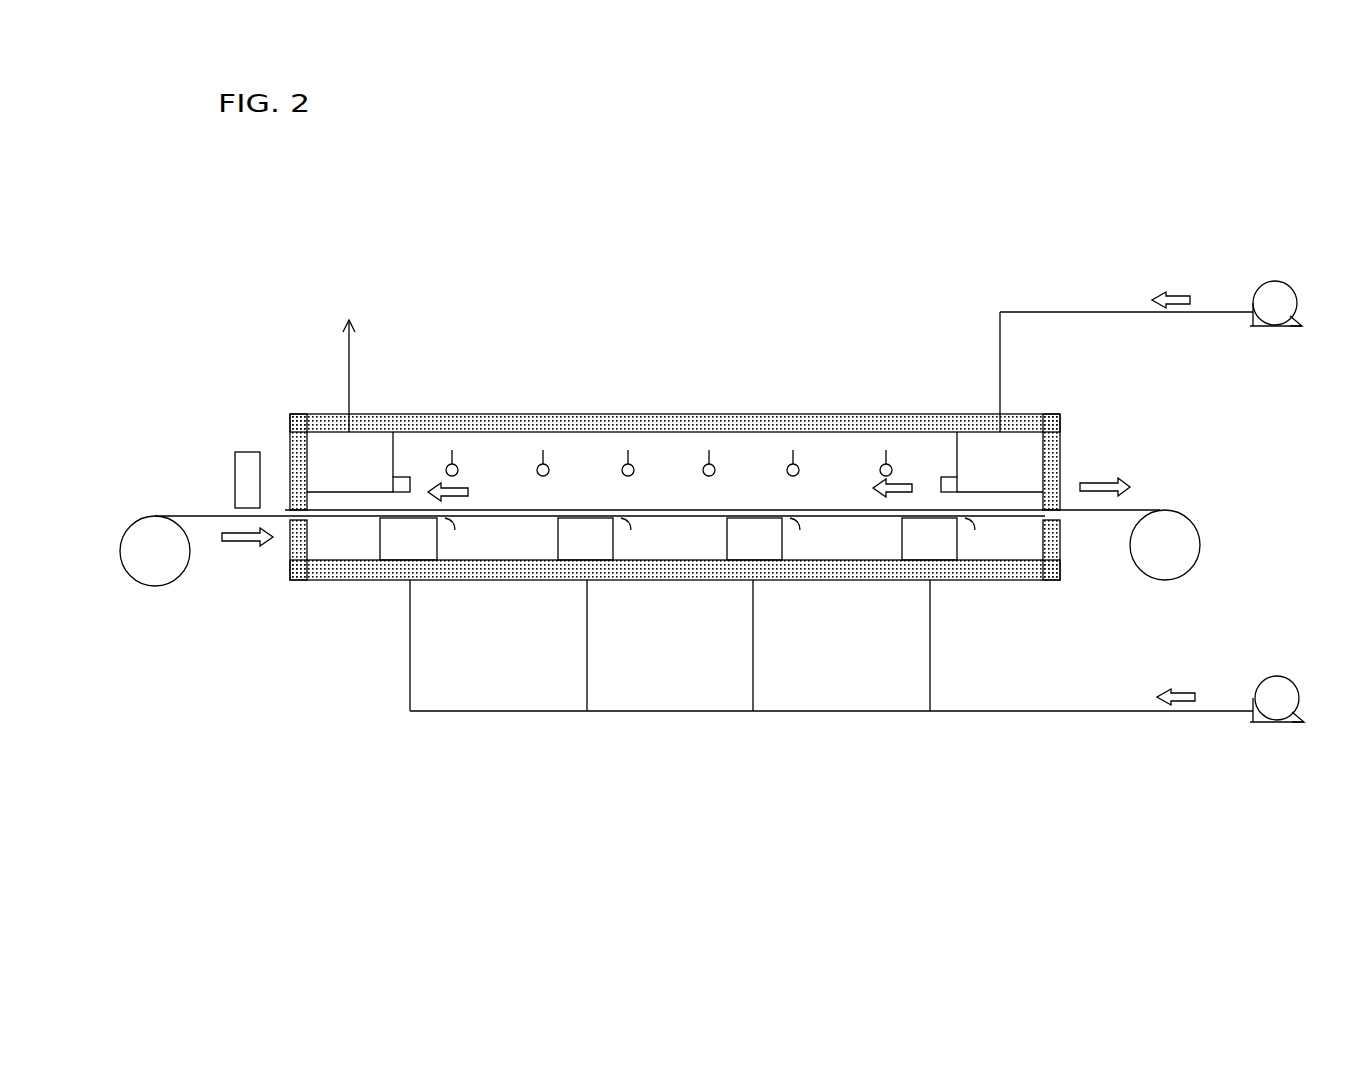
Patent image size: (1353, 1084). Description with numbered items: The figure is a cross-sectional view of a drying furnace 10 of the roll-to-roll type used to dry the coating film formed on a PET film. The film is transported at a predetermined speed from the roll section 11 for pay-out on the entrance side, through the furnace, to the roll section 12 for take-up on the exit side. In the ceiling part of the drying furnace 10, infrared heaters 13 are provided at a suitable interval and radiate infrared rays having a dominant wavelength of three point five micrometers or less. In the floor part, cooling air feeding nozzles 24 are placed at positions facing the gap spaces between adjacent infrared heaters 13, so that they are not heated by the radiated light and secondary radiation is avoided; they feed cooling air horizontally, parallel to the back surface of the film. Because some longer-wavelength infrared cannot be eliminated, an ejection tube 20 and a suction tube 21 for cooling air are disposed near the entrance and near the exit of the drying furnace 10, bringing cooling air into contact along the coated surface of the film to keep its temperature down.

The drying furnace 10 is at (764, 340).
The roll section for pay-out 11 is at (152, 535).
The roll section for take-up 12 is at (1164, 540).
The infrared heaters 13 is at (628, 462).
The ejection tube 20 is at (947, 476).
The suction tube 21 is at (400, 476).
The cooling air feeding nozzles 24 is at (402, 550).